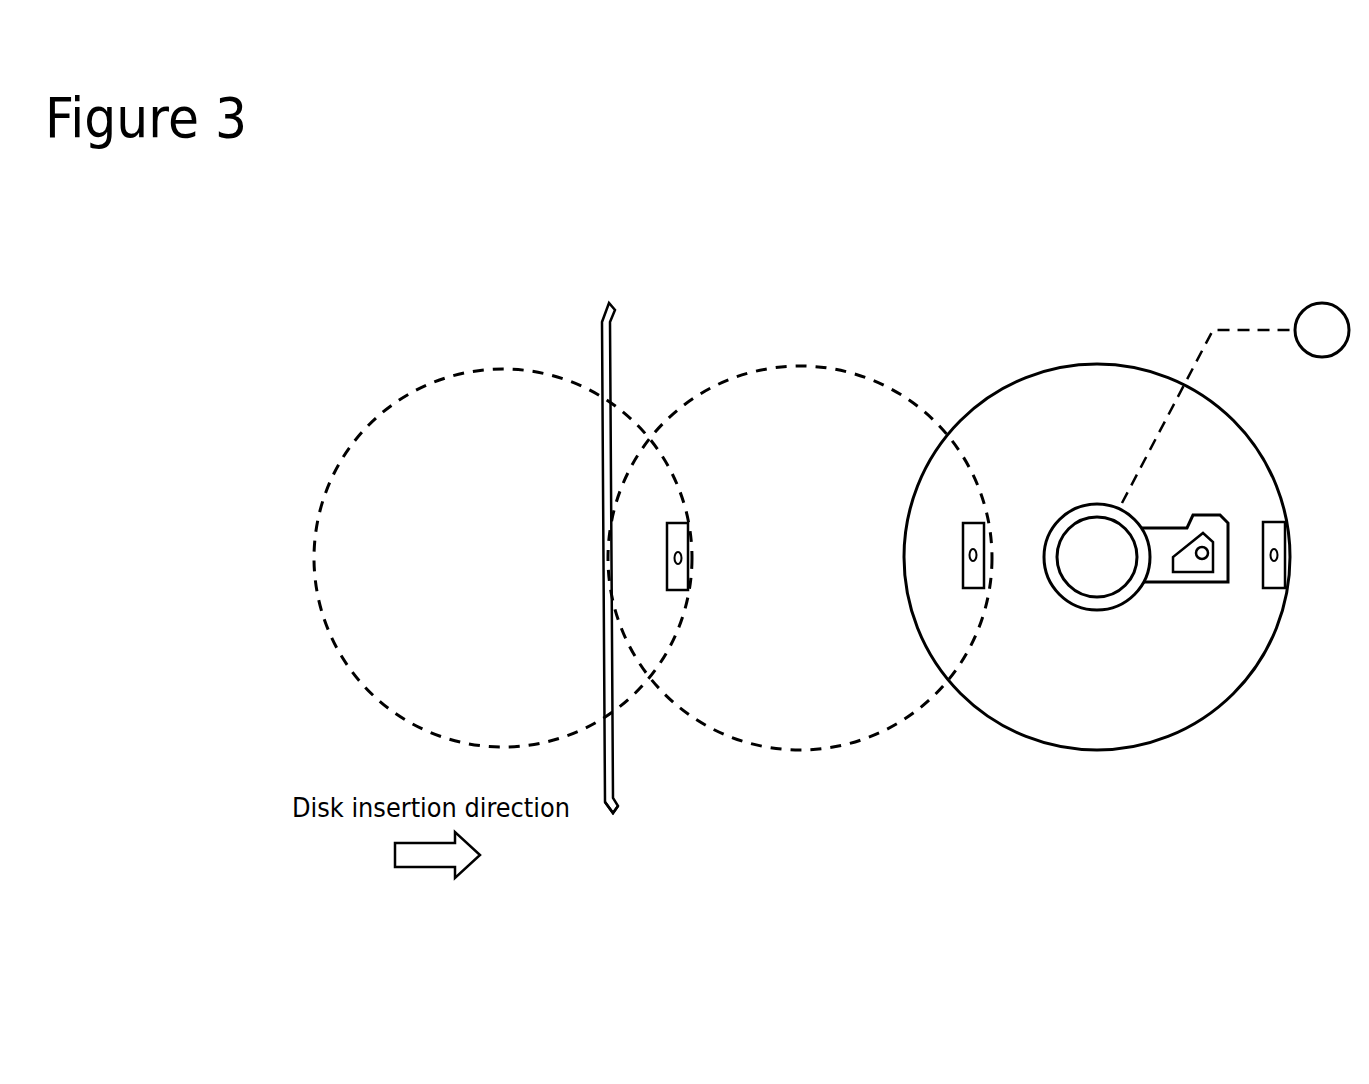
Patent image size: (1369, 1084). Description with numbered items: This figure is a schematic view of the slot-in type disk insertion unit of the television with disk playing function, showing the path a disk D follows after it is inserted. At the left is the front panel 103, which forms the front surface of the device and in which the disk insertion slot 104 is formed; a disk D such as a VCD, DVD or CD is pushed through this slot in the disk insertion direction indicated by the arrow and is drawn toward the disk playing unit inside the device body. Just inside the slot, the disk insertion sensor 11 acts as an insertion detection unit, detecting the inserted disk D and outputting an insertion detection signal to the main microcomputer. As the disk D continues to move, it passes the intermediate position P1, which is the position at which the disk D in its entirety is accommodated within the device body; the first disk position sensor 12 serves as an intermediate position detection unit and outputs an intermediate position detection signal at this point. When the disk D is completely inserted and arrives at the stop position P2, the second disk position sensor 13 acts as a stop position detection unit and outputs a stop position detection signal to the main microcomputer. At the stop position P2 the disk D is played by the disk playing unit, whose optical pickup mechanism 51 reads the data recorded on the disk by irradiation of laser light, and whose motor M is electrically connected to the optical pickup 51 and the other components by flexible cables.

The front panel 103 is at (598, 325).
The disk insertion slot 104 is at (609, 816).
The disk insertion sensor 11 is at (680, 590).
The first disk position sensor 12 is at (975, 590).
The second disk position sensor 13 is at (1273, 588).
The optical pickup mechanism 51 is at (1200, 560).
The intermediate position P1 is at (807, 350).
The stop position P2 is at (1097, 350).
The disk D is at (1018, 400).
The motor M is at (1235, 403).